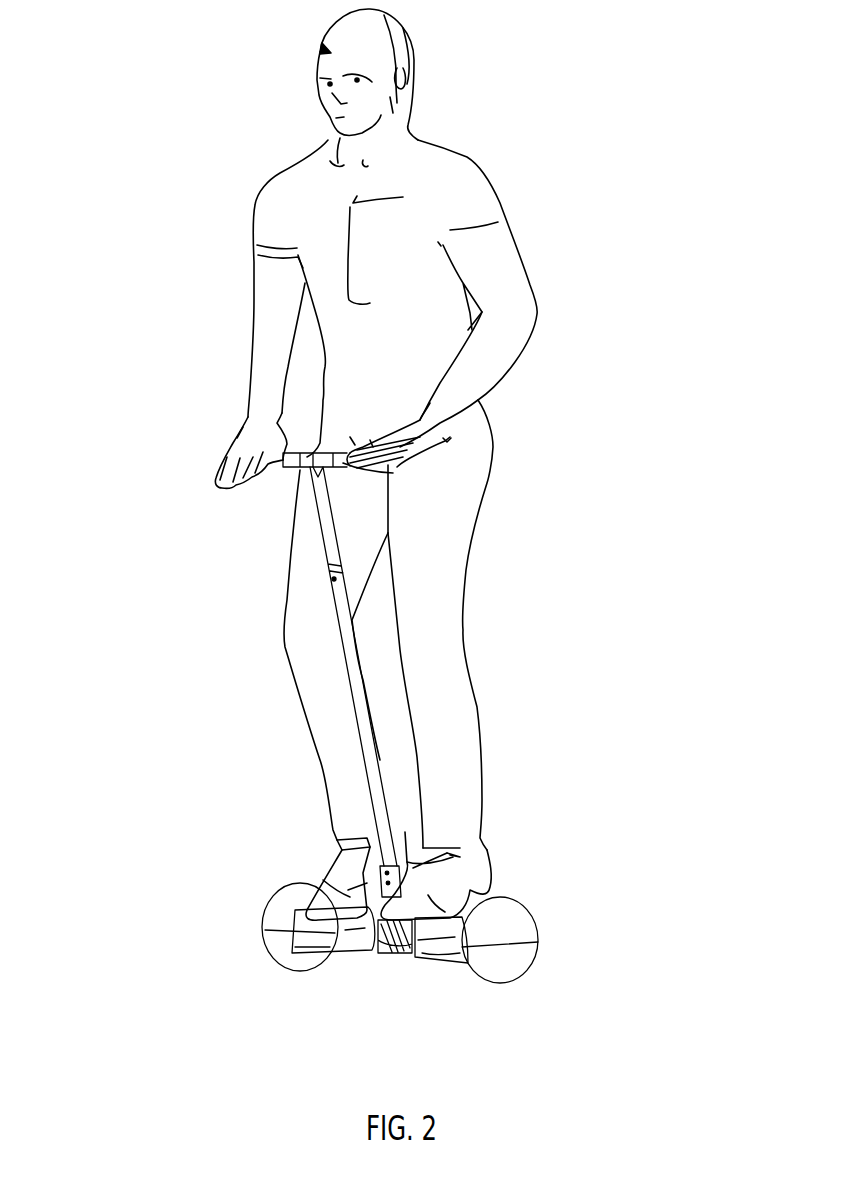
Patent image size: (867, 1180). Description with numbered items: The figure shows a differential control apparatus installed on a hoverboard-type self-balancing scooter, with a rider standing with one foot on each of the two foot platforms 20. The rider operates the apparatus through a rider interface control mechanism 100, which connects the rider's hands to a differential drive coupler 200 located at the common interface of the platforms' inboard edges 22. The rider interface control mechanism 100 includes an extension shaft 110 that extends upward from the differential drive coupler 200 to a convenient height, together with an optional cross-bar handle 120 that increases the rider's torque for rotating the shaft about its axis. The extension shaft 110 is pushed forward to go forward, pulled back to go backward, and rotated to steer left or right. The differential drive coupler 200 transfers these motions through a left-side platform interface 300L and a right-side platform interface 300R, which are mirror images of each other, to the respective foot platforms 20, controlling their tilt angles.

The cross-bar handle 120 is at (285, 463).
The extension shaft 110 is at (335, 650).
The rider interface control mechanism 100 is at (225, 675).
The differential drive coupler 200 is at (381, 880).
The right-side platform interface 300R is at (383, 948).
The inboard edges 22 is at (392, 953).
The left-side platform interface 300L is at (410, 957).
The foot platforms 20 is at (457, 960).